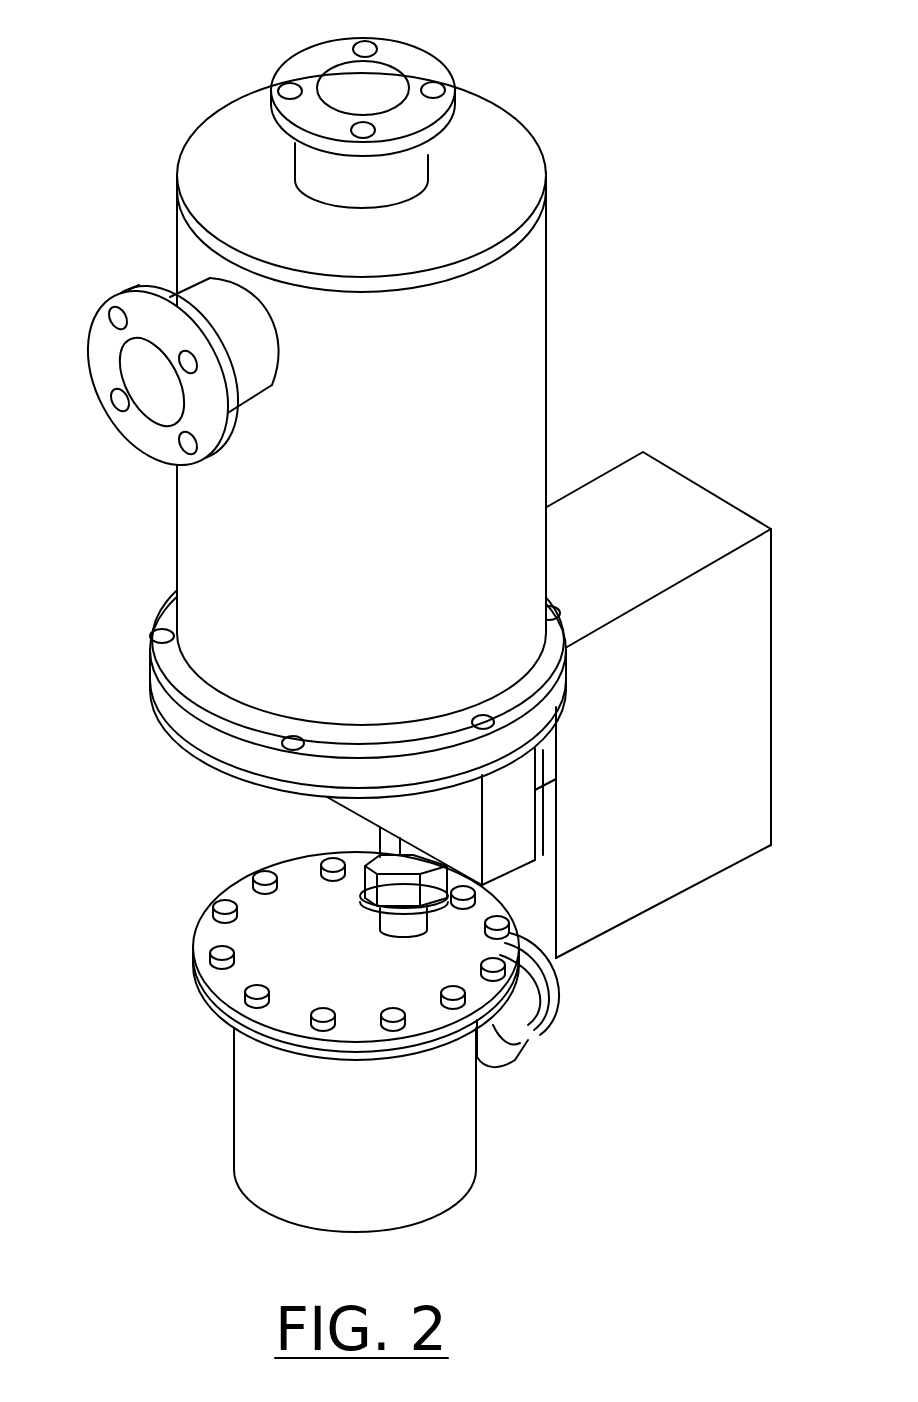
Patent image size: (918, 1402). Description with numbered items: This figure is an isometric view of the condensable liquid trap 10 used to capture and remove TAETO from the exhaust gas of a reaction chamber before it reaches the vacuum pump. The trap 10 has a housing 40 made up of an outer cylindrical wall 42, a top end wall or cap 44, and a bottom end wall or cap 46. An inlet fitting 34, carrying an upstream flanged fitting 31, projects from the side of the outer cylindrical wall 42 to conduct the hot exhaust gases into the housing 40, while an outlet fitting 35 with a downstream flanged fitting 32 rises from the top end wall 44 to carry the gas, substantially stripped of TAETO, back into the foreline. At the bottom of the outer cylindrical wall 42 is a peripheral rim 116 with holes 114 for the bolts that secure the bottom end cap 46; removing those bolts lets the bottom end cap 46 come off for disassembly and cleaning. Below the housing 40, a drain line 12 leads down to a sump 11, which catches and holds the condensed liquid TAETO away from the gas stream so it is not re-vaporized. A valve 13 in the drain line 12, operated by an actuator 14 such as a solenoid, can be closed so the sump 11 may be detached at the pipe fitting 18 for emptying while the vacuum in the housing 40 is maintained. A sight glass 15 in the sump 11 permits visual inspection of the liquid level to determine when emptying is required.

The trap 10 is at (388, 616).
The sump 11 is at (233, 1098).
The drain line 12 is at (380, 840).
The valve 13 is at (345, 813).
The actuator 14 is at (687, 473).
The sight glass 15 is at (557, 985).
The pipe fitting 18 is at (292, 864).
The flanged fitting 31 is at (100, 320).
The flanged fitting 32 is at (400, 40).
The inlet fitting 34 is at (166, 294).
The outlet fitting 35 is at (295, 155).
The housing 40 is at (547, 297).
The outer cylindrical wall 42 is at (177, 517).
The top end wall or cap 44 is at (220, 127).
The bottom end wall or cap 46 is at (230, 776).
The holes 114 is at (152, 630).
The peripheral rim 116 is at (148, 687).